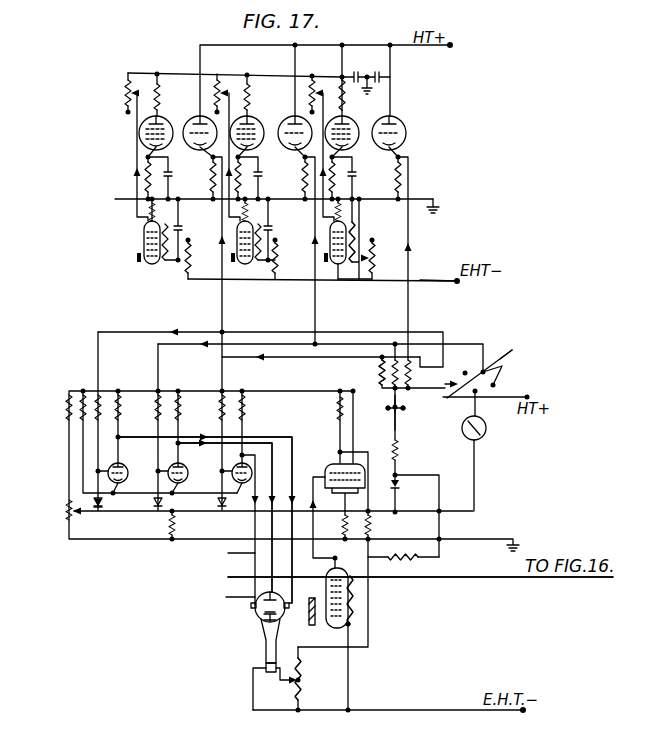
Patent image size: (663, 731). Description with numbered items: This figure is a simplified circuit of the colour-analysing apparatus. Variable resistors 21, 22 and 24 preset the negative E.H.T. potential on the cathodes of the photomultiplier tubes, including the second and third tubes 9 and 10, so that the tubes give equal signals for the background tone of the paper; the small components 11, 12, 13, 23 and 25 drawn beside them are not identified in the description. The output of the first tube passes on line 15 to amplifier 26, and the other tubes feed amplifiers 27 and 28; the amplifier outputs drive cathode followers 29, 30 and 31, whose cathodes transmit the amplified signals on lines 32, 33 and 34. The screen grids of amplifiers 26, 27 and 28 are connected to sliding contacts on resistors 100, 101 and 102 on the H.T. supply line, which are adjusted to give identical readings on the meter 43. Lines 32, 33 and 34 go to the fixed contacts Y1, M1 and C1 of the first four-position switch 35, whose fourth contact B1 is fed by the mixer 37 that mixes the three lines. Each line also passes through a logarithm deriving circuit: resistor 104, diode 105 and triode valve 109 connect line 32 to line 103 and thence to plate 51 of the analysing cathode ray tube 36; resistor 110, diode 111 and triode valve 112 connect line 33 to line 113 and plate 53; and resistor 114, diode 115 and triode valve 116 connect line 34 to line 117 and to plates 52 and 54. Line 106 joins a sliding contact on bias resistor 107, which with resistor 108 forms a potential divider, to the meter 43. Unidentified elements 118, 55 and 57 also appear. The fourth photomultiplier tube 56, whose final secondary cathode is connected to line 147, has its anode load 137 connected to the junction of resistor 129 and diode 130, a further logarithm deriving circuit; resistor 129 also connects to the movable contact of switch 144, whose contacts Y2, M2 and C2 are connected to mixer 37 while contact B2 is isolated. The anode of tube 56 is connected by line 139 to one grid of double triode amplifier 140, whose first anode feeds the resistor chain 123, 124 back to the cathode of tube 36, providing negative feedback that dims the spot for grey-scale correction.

The resistor 100 is at (110, 94).
The resistor 101 is at (221, 85).
The resistor 102 is at (322, 85).
The amplifier 26 is at (152, 117).
The cathode follower 29 is at (197, 116).
The cathode follower 30 is at (288, 117).
The cathode follower 31 is at (381, 117).
The amplifier 27 is at (303, 182).
The amplifier 28 is at (396, 183).
The line 15 is at (264, 202).
The photomultiplier tube 9 is at (236, 234).
The photomultiplier tube 10 is at (329, 234).
The photo-cathode 11 is at (137, 263).
The photo-cathode 12 is at (233, 263).
The photo-cathode 13 is at (325, 263).
The variable resistor 21 is at (205, 258).
The variable resistor 22 is at (296, 258).
The variable resistor 24 is at (390, 258).
The lead 23 is at (347, 281).
The EHT terminal 25 is at (437, 281).
The line 32 is at (270, 339).
The line 33 is at (320, 341).
The line 34 is at (272, 356).
The resistor 104 is at (101, 410).
The resistor 108 is at (50, 411).
The resistor 110 is at (132, 407).
The resistor 114 is at (193, 407).
The line 103 is at (300, 569).
The line 113 is at (225, 506).
The amplifier triode valve 109 is at (148, 448).
The triode valve 112 is at (183, 468).
The triode valve 116 is at (247, 462).
The diode 111 is at (104, 505).
The diode 105 is at (98, 509).
The line 106 is at (157, 509).
The diode 115 is at (220, 509).
The bias resistor 107 is at (49, 518).
The resistor 118 is at (170, 536).
The double triode amplifier 140 is at (338, 438).
The line 139 is at (324, 470).
The mixer 37 is at (375, 378).
The fixed contact Y1 is at (443, 387).
The fixed contact M1 is at (465, 371).
The four-position switch 35 is at (486, 369).
The fixed contact C1 is at (518, 353).
The fixed contact B1 is at (497, 387).
The meter 43 is at (487, 430).
The fixed contact M2 is at (385, 408).
The fixed contact C2 is at (405, 408).
The fixed contact B2 is at (403, 416).
The fixed contact Y2 is at (390, 412).
The four-position switch 144 is at (401, 430).
The resistor 129 is at (398, 462).
The diode 130 is at (400, 494).
The resistor 123 is at (373, 528).
The anode load resistor 137 is at (405, 580).
The line 147 is at (503, 580).
The line 117 is at (321, 577).
The lead 57 is at (230, 601).
The analysing cathode ray tube 36 is at (265, 650).
The deflector plate 53 is at (251, 605).
The deflector plate 52 is at (260, 612).
The deflector plate 54 is at (263, 622).
The deflector plate 51 is at (296, 600).
The screen 55 is at (311, 616).
The fourth photomultiplier tube 56 is at (337, 629).
The resistor 124 is at (302, 683).